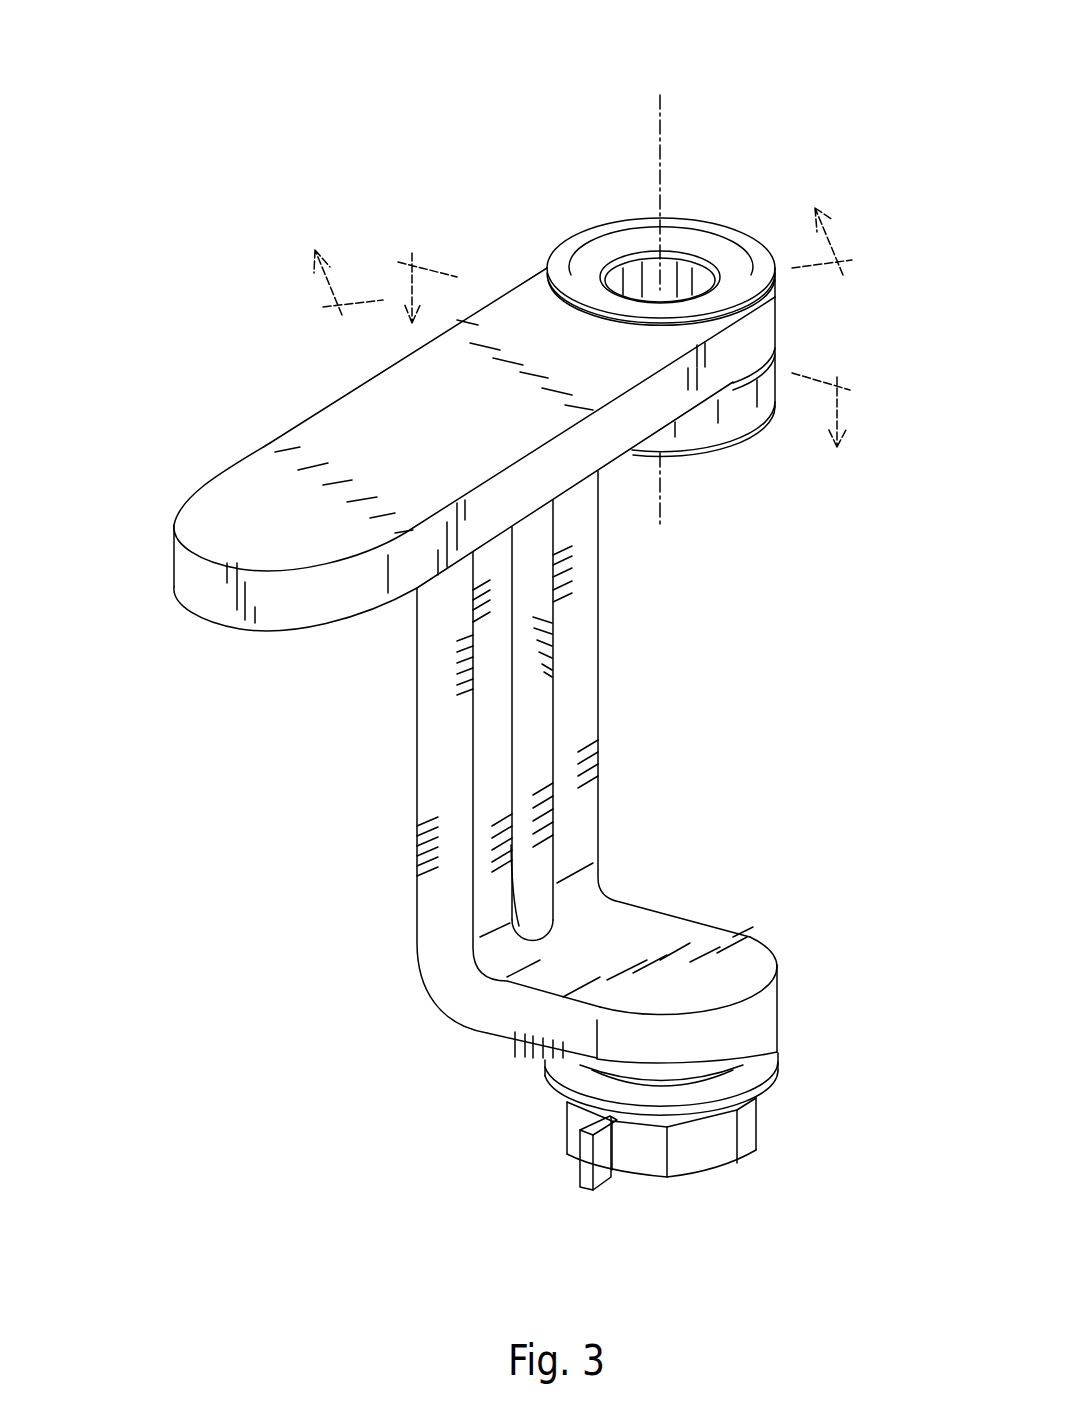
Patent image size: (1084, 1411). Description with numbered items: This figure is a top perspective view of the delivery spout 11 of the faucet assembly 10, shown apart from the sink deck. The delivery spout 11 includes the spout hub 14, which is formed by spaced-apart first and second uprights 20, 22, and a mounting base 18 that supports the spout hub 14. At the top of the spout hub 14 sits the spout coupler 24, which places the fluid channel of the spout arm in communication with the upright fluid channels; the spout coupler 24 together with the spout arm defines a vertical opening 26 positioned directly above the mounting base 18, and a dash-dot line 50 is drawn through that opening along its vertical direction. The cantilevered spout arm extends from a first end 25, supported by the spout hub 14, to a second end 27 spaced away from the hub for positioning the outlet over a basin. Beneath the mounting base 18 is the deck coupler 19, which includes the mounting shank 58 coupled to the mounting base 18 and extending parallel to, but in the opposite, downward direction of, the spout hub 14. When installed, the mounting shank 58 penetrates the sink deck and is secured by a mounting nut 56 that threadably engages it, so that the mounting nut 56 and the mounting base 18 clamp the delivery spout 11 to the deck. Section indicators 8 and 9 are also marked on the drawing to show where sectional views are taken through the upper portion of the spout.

The section line of FIG. 8 is at (569, 248).
The section line of FIG. 9 is at (628, 362).
The faucet assembly 10 is at (378, 140).
The delivery spout 11 is at (531, 205).
The spout hub 14 is at (372, 768).
The mounting base 18 is at (713, 915).
The deck coupler 19 is at (795, 1047).
The first upright 20 is at (408, 848).
The second upright 22 is at (608, 717).
The spout coupler 24 is at (793, 348).
The first end 25 is at (612, 217).
The vertical opening 26 is at (683, 265).
The second end 27 is at (152, 495).
The central axis 50 is at (662, 120).
The mounting nut 56 is at (555, 1158).
The mounting shank 58 is at (727, 1080).